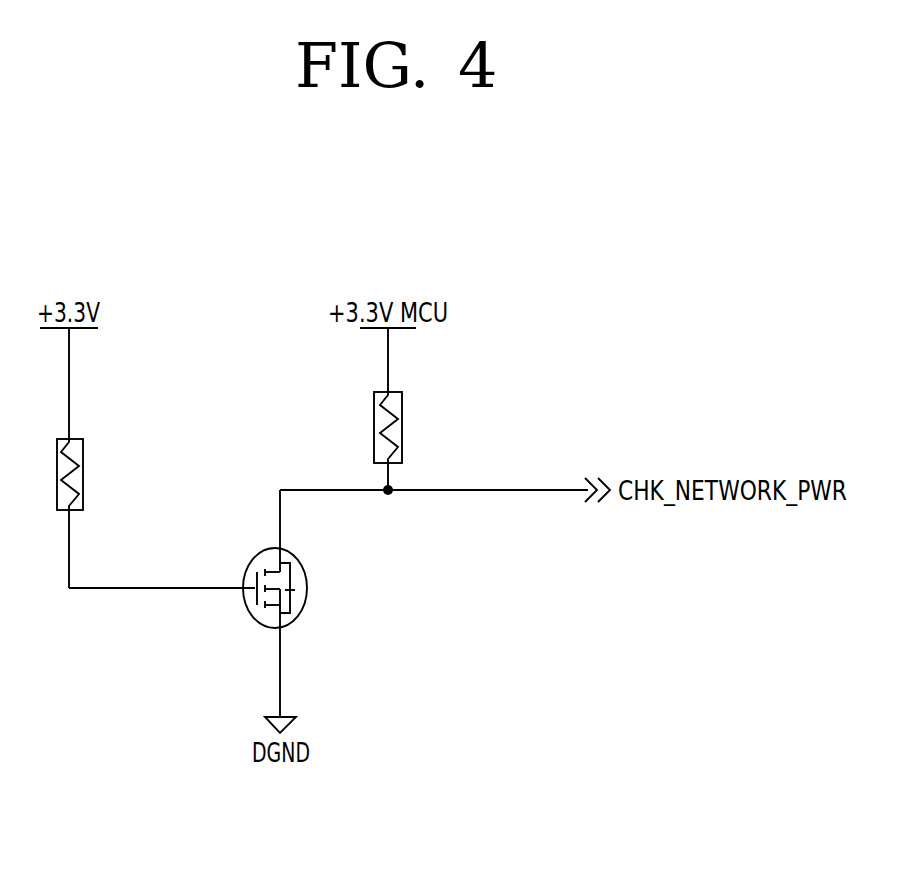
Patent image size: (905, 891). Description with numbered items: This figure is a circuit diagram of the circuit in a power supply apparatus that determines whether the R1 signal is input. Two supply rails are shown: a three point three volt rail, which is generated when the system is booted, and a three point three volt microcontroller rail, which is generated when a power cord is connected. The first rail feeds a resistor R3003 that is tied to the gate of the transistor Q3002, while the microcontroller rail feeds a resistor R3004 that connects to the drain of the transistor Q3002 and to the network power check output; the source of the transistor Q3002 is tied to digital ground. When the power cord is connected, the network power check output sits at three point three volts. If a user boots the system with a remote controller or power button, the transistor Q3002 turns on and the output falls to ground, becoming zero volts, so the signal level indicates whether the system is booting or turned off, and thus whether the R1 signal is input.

The pull-up resistor 4.7 kOhm R3003 is at (121, 474).
The pull-up resistor 4.7 kOhm R3004 is at (439, 427).
The transistor Q3002 is at (313, 588).